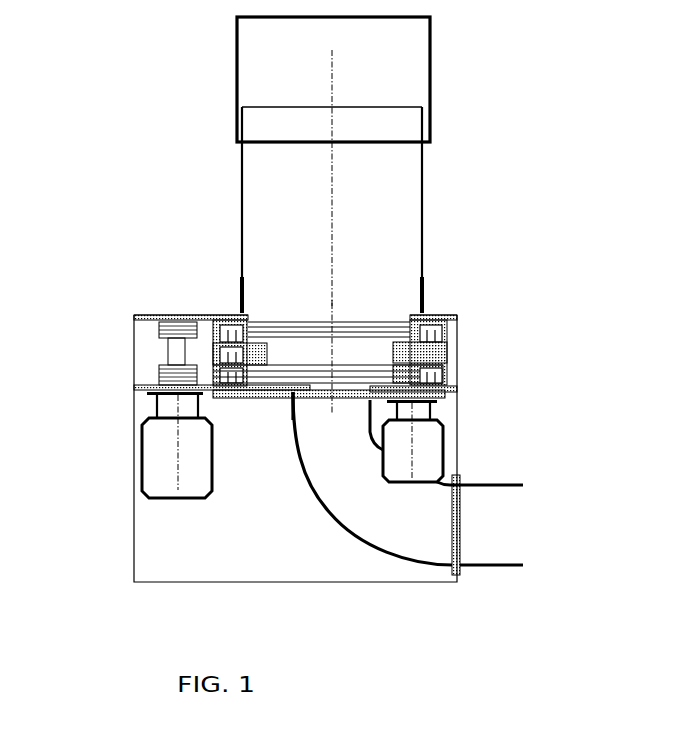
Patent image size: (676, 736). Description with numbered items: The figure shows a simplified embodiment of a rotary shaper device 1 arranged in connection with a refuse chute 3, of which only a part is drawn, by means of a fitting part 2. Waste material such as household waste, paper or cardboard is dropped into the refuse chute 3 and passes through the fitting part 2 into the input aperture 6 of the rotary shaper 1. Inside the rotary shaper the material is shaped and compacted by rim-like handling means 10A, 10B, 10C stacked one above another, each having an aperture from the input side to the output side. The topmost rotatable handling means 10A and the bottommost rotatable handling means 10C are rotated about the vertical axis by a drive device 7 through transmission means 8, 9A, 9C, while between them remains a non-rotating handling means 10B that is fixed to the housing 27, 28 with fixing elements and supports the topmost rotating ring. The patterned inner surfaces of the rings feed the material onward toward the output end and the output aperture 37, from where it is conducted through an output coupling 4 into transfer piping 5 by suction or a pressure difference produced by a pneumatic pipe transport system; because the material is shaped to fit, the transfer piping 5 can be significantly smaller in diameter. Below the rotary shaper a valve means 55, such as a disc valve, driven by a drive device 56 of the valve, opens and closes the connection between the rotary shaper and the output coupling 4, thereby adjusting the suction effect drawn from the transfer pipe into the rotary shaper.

The rotary shaper device 1 is at (172, 303).
The fitting part 2 is at (252, 230).
The refuse chute 3 is at (262, 90).
The output coupling 4 is at (337, 487).
The transfer piping 5 is at (505, 530).
The input aperture 6 is at (340, 298).
The drive device 7 is at (150, 477).
The transmission means 8 is at (173, 355).
The transmission means 9A is at (208, 326).
The transmission means 9C is at (207, 397).
The topmost rotatable handling means 10A is at (420, 323).
The non-rotating handling means 10B is at (408, 354).
The bottommost rotatable handling means 10C is at (398, 376).
The housing 27 is at (137, 313).
The housing 28 is at (227, 400).
The output aperture 37 is at (293, 400).
The valve means 55 is at (443, 395).
The drive device of the valve 56 is at (430, 462).